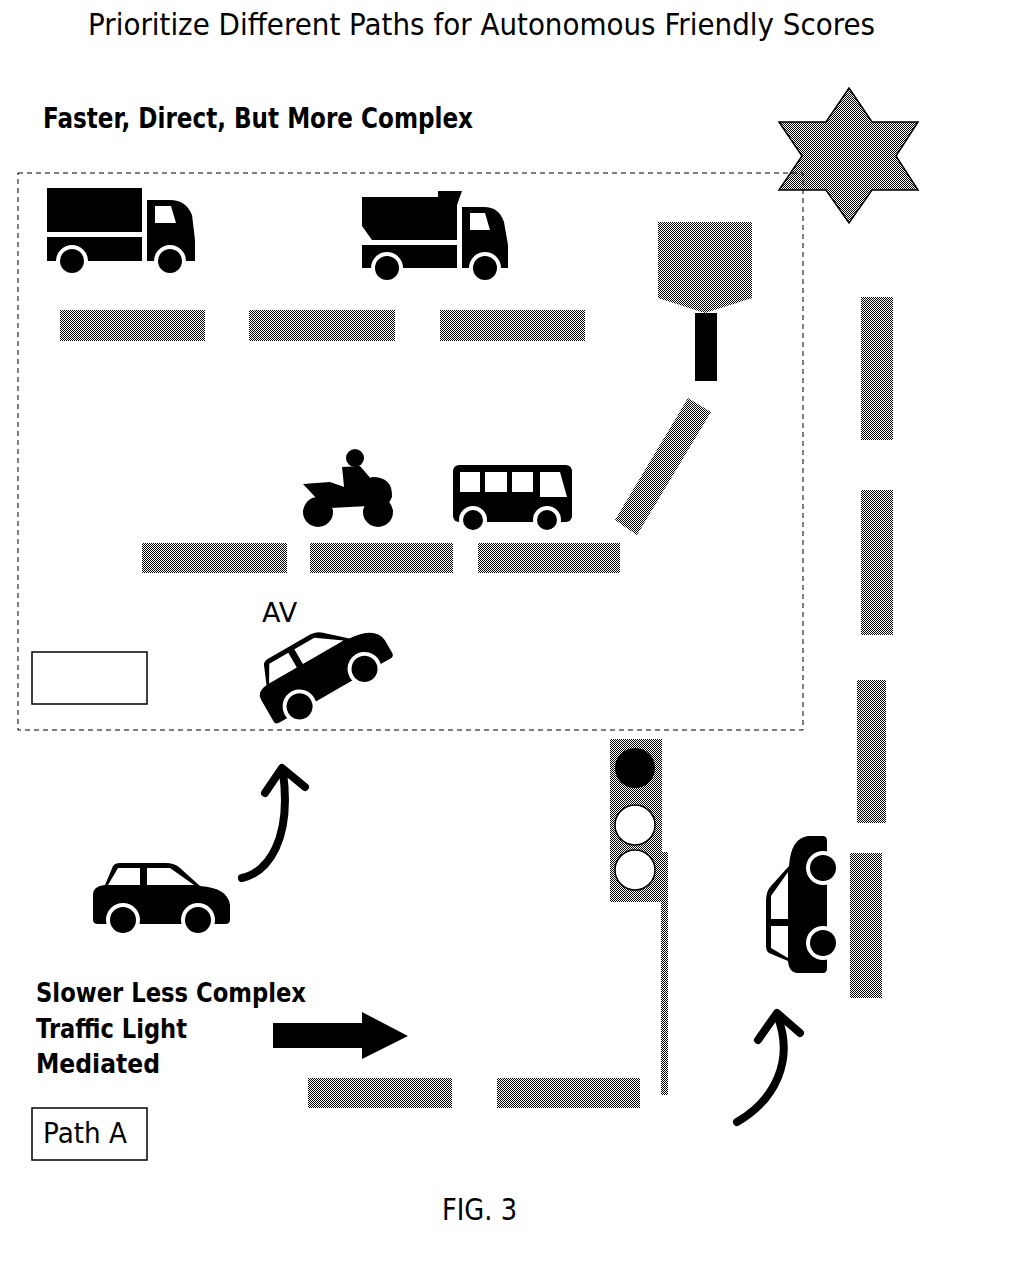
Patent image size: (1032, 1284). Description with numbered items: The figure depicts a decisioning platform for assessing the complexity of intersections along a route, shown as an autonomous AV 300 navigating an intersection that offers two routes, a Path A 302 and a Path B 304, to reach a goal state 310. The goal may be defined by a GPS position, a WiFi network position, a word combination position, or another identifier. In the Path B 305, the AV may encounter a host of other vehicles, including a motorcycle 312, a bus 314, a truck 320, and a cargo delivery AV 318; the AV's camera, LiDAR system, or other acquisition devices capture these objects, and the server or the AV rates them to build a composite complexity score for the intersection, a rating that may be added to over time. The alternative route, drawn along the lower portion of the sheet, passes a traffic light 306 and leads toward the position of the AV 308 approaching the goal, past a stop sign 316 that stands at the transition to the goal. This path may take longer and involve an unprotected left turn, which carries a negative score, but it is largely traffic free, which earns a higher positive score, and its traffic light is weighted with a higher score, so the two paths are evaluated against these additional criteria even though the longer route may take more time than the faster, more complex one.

The autonomous AV 300 is at (133, 850).
The Path A 302 is at (352, 1013).
The Path B 304 is at (307, 827).
The Path B 305 is at (70, 660).
The traffic light 306 is at (673, 780).
The autonomous vehicle at goal approach 308 is at (795, 972).
The state 310 is at (875, 130).
The motorcycle 312 is at (382, 483).
The bus 314 is at (487, 465).
The stop sign 316 is at (723, 222).
The cargo delivery AV 318 is at (190, 222).
The truck 320 is at (488, 208).